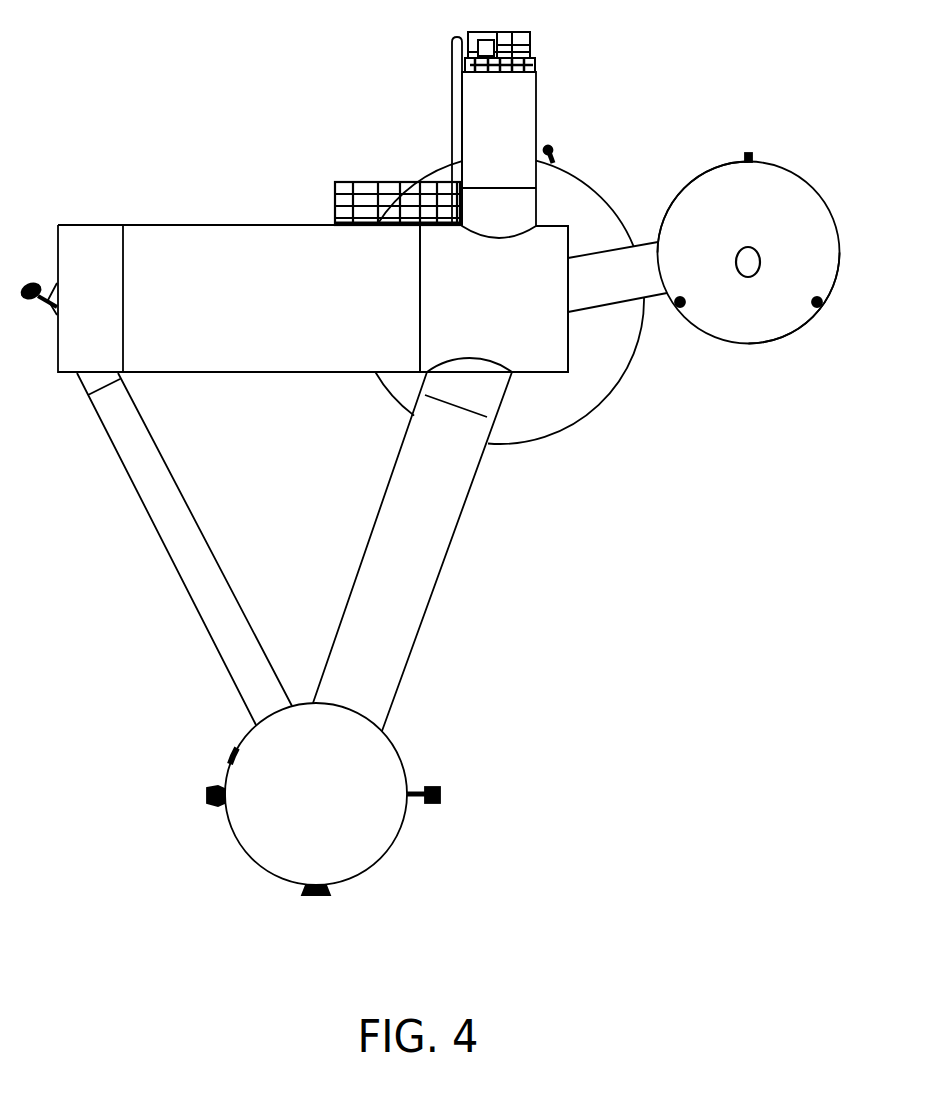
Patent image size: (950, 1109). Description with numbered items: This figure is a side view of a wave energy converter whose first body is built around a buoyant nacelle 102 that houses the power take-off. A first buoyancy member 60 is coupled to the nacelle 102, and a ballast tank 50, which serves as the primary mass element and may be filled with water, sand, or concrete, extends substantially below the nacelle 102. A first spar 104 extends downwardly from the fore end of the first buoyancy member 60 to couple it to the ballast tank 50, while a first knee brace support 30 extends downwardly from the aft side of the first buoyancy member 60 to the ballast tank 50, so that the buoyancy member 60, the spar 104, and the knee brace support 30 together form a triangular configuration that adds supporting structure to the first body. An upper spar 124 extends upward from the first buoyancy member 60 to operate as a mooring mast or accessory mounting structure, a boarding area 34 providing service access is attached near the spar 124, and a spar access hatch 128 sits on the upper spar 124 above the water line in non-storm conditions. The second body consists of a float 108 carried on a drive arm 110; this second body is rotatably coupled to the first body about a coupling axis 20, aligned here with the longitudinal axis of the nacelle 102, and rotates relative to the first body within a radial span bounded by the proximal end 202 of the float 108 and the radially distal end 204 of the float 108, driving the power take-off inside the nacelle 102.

The coupling axis 20 is at (503, 300).
The first knee brace support 30 is at (170, 551).
The boarding areas 34 is at (369, 181).
The ballast tank 50 is at (300, 812).
The first buoyancy member 60 is at (255, 224).
The buoyant nacelle 102 is at (590, 185).
The first spar 104 is at (446, 550).
The float 108 is at (800, 193).
The drive arm 110 is at (591, 291).
The upper spar 124 is at (537, 100).
The spar access hatch 128 is at (530, 37).
The proximal end of the float 202 is at (676, 190).
The radially distal end of the float 204 is at (842, 247).